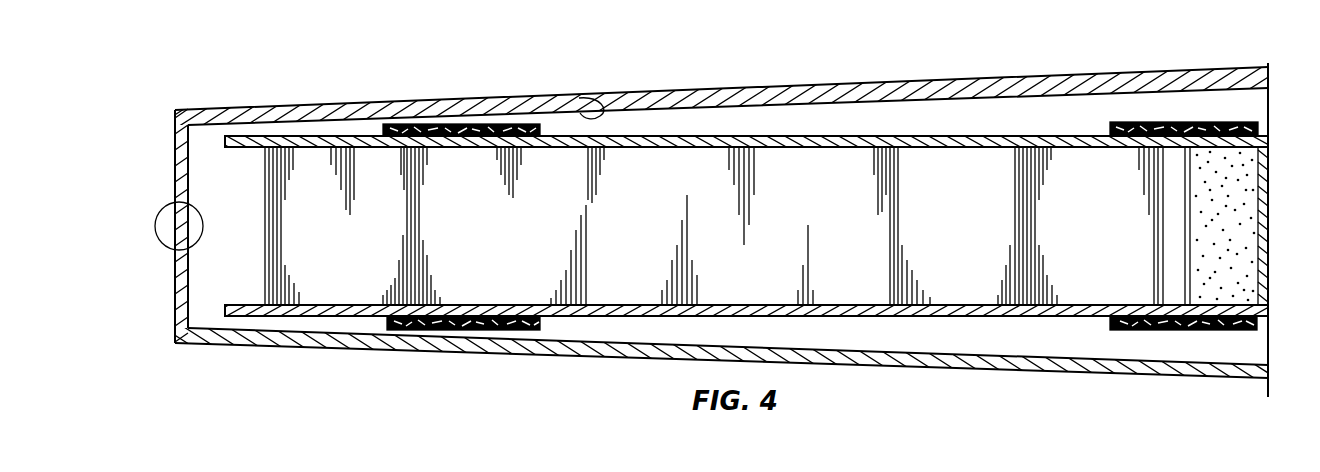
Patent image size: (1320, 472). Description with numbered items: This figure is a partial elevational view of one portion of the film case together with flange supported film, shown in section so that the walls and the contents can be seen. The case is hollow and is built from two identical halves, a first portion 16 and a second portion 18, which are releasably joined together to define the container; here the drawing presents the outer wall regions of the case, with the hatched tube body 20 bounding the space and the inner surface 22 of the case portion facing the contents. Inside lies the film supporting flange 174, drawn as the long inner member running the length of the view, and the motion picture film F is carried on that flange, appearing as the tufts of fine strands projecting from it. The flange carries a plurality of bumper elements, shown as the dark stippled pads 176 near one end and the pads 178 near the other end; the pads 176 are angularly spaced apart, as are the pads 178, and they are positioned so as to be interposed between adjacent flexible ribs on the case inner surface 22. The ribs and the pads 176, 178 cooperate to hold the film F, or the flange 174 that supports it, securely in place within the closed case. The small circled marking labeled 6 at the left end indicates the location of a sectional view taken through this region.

The first portion 16 is at (328, 104).
The second portion 18 is at (1125, 373).
The outer tube body 20 is at (488, 100).
The inner surface 22 is at (580, 99).
The film supporting flange 174 is at (986, 134).
The pad 176 is at (421, 124).
The pad 178 is at (1130, 122).
The motion picture film F is at (264, 252).
The section line 6- 6 is at (180, 218).